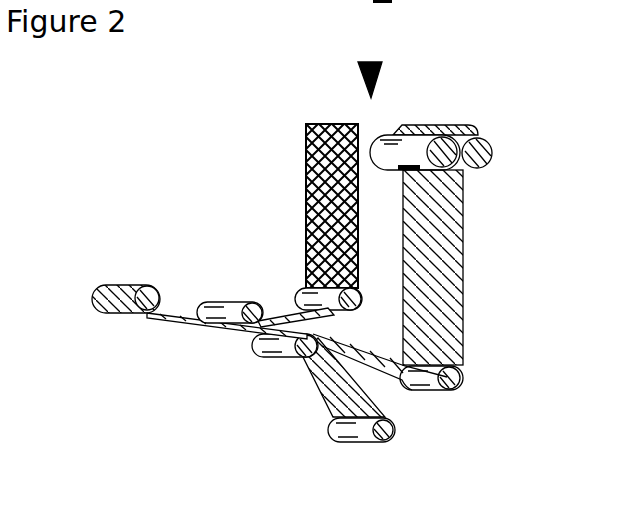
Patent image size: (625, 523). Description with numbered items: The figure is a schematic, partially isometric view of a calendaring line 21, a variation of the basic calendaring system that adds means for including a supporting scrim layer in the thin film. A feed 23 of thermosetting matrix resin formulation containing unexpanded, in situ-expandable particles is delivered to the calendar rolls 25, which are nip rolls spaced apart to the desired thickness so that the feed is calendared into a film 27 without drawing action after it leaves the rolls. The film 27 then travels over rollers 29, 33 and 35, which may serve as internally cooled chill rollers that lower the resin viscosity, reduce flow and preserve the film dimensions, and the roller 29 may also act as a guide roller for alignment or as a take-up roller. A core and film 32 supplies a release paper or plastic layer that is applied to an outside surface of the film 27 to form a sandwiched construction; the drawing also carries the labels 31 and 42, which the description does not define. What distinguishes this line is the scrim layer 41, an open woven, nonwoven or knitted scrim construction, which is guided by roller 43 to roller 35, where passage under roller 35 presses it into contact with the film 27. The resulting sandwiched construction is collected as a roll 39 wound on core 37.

The calendaring line 21 is at (370, 68).
The feed 23 is at (428, 132).
The calendar rolls 25 is at (460, 142).
The film 27 is at (442, 252).
The roller 29 is at (457, 380).
The laminated web 31 is at (407, 390).
The core and film 32 is at (340, 420).
The roller 33 is at (302, 360).
The roller 35 is at (218, 307).
The core 37 is at (152, 285).
The roll 39 is at (113, 317).
The scrim layer 41 is at (308, 160).
The element 42 is at (384, 1).
The roller 43 is at (308, 288).